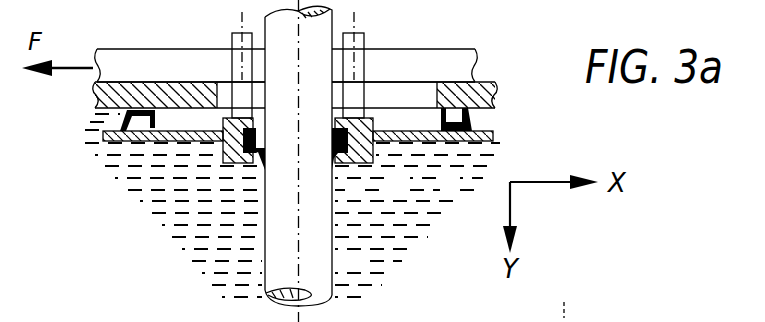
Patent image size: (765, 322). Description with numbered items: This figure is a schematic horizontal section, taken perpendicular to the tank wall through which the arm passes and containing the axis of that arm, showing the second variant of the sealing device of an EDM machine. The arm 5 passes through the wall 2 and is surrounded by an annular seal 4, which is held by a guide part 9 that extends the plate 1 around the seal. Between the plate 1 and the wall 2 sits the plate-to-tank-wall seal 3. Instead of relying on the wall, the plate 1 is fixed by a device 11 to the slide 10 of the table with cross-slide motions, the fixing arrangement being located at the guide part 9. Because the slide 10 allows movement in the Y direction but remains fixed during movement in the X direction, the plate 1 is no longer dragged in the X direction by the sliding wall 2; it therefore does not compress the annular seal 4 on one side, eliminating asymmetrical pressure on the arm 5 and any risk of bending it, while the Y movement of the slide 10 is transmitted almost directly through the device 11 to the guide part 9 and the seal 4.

The plate 1 is at (452, 142).
The wall 2 is at (487, 96).
The plate-to-tank-wall seal 3 is at (472, 121).
The annular seal 4 is at (335, 156).
The arm 5 is at (315, 272).
The guide part 9 is at (372, 161).
The slide 10 is at (433, 66).
The device 11 is at (356, 66).